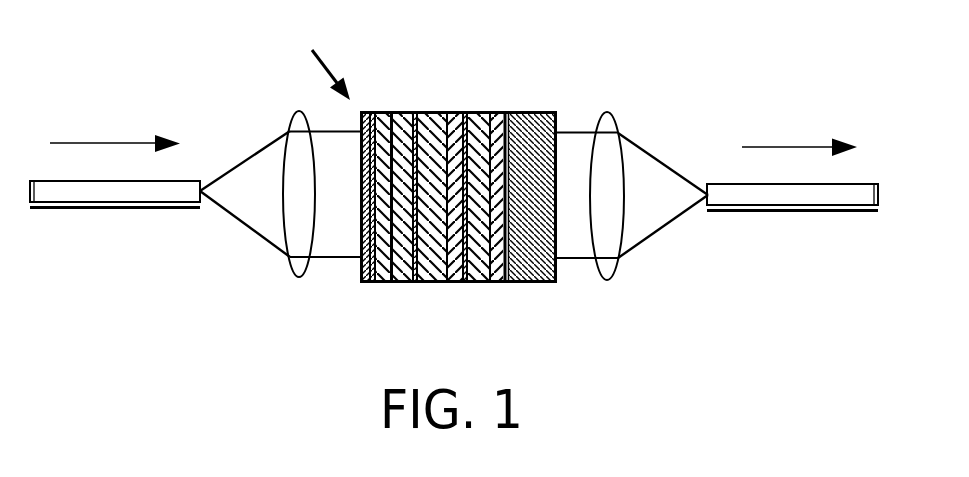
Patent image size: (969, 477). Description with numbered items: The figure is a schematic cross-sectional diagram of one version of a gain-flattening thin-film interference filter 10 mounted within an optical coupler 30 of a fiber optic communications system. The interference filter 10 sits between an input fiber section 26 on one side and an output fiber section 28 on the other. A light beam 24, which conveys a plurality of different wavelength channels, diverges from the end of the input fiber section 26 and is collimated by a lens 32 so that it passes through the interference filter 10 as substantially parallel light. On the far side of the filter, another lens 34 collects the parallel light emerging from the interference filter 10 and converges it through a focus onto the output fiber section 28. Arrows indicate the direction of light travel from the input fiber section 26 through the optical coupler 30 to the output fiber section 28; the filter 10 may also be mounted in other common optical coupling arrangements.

The gain-flattening thin-film interference filter 10 is at (487, 118).
The light beam 24 is at (236, 223).
The input fiber section 26 is at (45, 210).
The output fiber section 28 is at (760, 212).
The optical coupler 30 is at (318, 59).
The lens 32 is at (297, 121).
The lens 34 is at (618, 128).